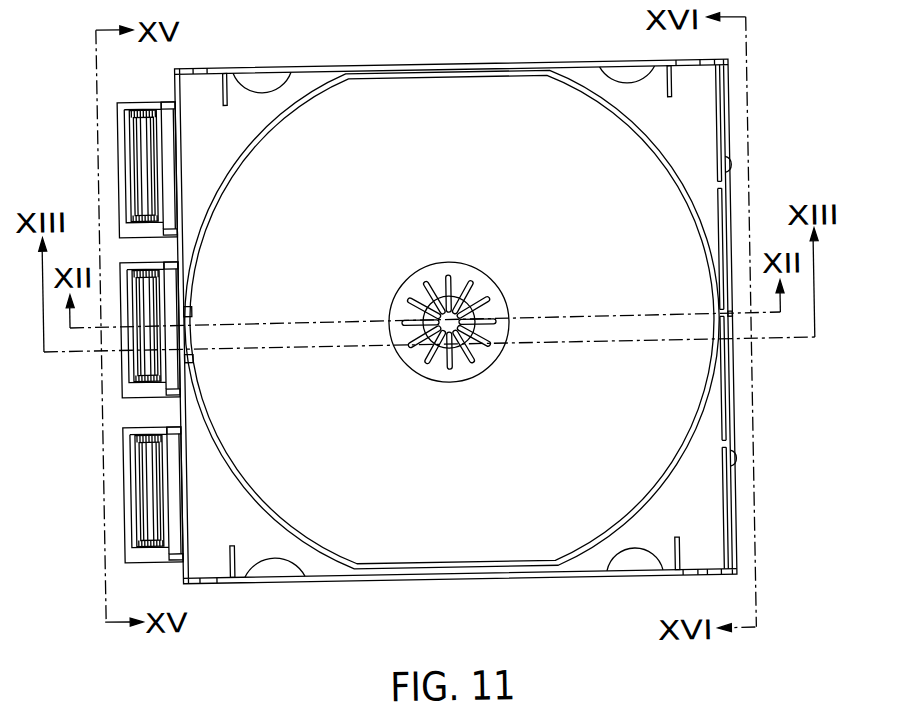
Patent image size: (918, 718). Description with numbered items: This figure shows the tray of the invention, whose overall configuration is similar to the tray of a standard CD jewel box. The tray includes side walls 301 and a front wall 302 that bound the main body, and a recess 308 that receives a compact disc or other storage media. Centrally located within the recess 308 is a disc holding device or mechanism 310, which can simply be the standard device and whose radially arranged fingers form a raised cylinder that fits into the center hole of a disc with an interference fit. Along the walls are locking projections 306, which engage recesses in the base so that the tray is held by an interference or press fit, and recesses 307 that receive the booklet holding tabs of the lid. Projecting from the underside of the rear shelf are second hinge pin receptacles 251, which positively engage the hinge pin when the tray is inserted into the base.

The second hinge pin receptacle 251 is at (104, 169).
The side walls 301 is at (334, 63).
The front wall 302 is at (730, 142).
The locking projections 306 is at (204, 63).
The recesses for booklet holding tabs 307 is at (262, 84).
The recess for the CD or other storage media 308 is at (464, 464).
The disc holding device or mechanism 310 is at (506, 269).